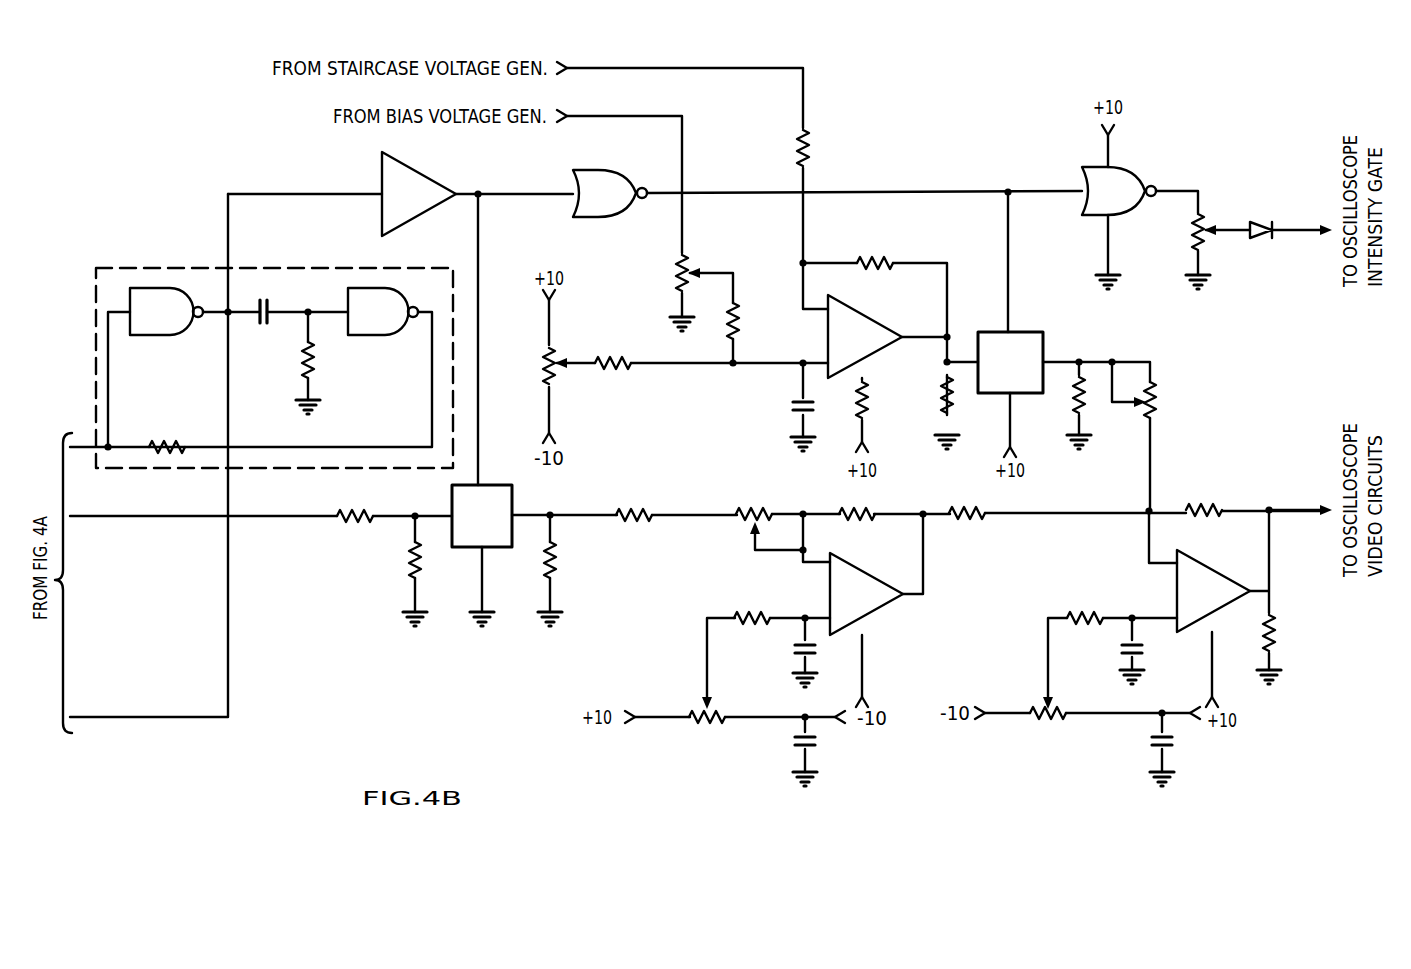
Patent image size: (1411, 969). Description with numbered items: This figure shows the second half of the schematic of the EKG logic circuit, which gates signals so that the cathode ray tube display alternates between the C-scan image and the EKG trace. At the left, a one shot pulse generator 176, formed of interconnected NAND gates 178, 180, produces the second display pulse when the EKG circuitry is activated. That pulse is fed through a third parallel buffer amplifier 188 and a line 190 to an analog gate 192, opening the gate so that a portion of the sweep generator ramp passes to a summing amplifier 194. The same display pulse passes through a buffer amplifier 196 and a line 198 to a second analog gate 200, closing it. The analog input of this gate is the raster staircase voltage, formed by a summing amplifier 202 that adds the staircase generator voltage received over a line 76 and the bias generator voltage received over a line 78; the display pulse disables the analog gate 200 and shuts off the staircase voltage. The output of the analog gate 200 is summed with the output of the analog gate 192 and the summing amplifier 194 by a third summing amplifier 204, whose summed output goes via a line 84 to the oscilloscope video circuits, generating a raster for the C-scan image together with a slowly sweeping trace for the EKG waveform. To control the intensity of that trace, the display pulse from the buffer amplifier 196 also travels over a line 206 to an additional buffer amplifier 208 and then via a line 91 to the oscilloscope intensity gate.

The line 76 is at (773, 69).
The line 78 is at (684, 150).
The line 84 is at (1284, 508).
The line 91 is at (1284, 224).
The one shot pulse generator 176 is at (170, 260).
The NAND gate 178 is at (138, 324).
The NAND gate 180 is at (356, 324).
The buffer amplifier 188 is at (399, 206).
The line 190 is at (480, 244).
The analog gate 192 is at (468, 528).
The summing amplifier 194 is at (841, 606).
The buffer amplifier 196 is at (591, 205).
The line 198 is at (1010, 242).
The analog gate 200 is at (995, 374).
The summing amplifier 202 is at (838, 349).
The summing amplifier 204 is at (1187, 603).
The line 206 is at (935, 192).
The buffer amplifier 208 is at (1100, 203).